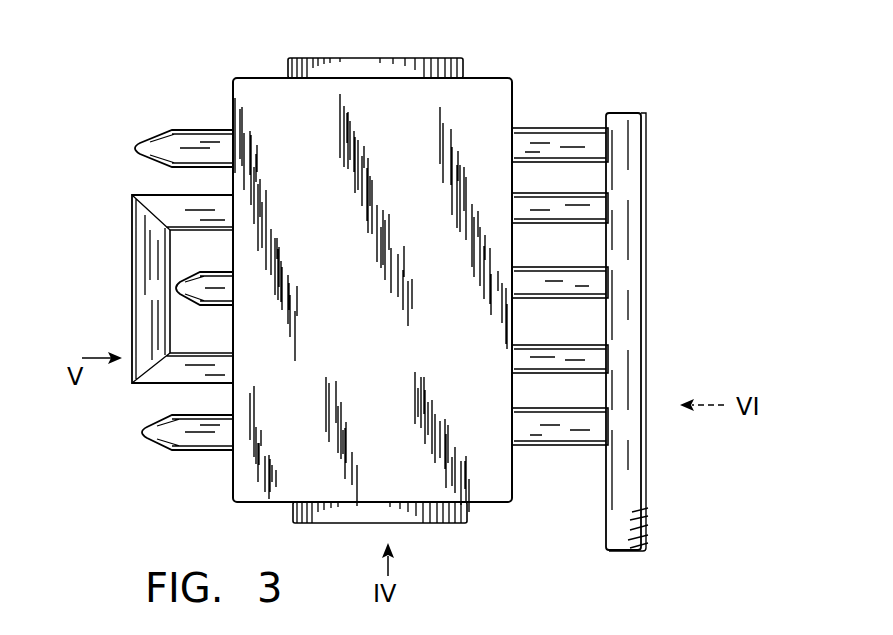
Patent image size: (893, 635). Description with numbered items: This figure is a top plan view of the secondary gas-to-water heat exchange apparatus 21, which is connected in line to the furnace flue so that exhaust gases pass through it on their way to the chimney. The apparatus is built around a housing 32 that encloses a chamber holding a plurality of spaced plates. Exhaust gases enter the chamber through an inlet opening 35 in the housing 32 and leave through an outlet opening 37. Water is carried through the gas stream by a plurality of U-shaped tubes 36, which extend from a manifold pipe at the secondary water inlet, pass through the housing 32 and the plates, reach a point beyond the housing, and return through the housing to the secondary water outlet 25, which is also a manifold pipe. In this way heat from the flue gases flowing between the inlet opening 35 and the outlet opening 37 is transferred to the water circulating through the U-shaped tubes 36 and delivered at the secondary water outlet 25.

The secondary gas-to-water heat exchange apparatus 21 is at (524, 66).
The secondary water outlet 25 is at (635, 316).
The housing 32 is at (239, 486).
The inlet opening 35 is at (466, 523).
The U-shaped tubes 36 is at (537, 200).
The outlet opening 37 is at (457, 58).